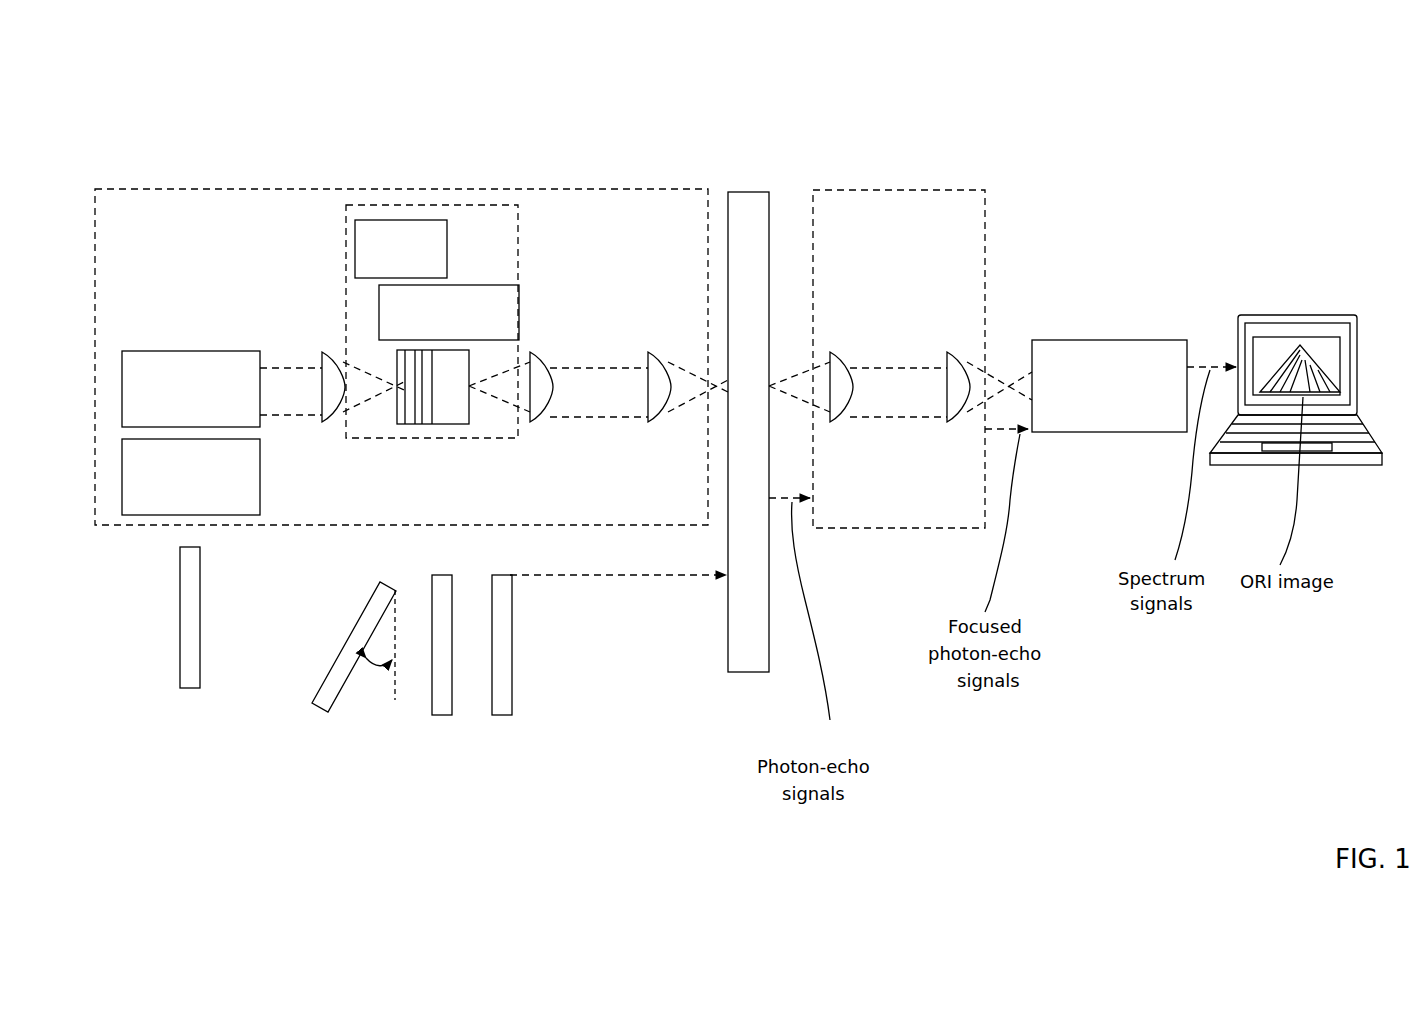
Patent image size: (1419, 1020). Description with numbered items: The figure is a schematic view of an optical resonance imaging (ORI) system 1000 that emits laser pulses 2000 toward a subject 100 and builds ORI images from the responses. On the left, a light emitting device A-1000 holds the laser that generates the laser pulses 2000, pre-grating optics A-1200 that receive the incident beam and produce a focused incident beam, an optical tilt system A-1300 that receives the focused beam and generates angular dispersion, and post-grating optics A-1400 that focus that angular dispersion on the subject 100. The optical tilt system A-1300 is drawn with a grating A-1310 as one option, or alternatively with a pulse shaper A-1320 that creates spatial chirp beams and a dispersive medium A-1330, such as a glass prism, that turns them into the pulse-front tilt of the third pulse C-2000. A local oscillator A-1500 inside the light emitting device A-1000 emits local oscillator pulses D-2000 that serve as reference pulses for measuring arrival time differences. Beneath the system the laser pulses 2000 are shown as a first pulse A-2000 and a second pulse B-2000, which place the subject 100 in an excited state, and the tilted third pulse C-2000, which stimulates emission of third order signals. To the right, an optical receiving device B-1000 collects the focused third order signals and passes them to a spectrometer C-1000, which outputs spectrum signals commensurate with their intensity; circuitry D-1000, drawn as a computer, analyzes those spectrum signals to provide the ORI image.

The ORI system 1000 is at (1108, 162).
The light emitting device A-1000 is at (226, 190).
The local oscillator A-1500 is at (191, 477).
The pre-grating optics A-1200 is at (336, 449).
The optical tilt system A-1300 is at (494, 454).
The grating A-1310 is at (397, 350).
The pulse shaper A-1320 is at (447, 232).
The dispersive medium A-1330 is at (380, 297).
The post-grating optics A-1400 is at (583, 450).
The subject 100 is at (745, 190).
The optical receiving device B-1000 is at (864, 190).
The spectrometer C-1000 is at (1109, 386).
The circuitry D-1000 is at (1268, 315).
The laser pulses 2000 is at (621, 770).
The local oscillator pulses D-2000 is at (178, 690).
The third pulse C-2000 is at (320, 706).
The second pulse B-2000 is at (488, 755).
The first pulse A-2000 is at (508, 718).